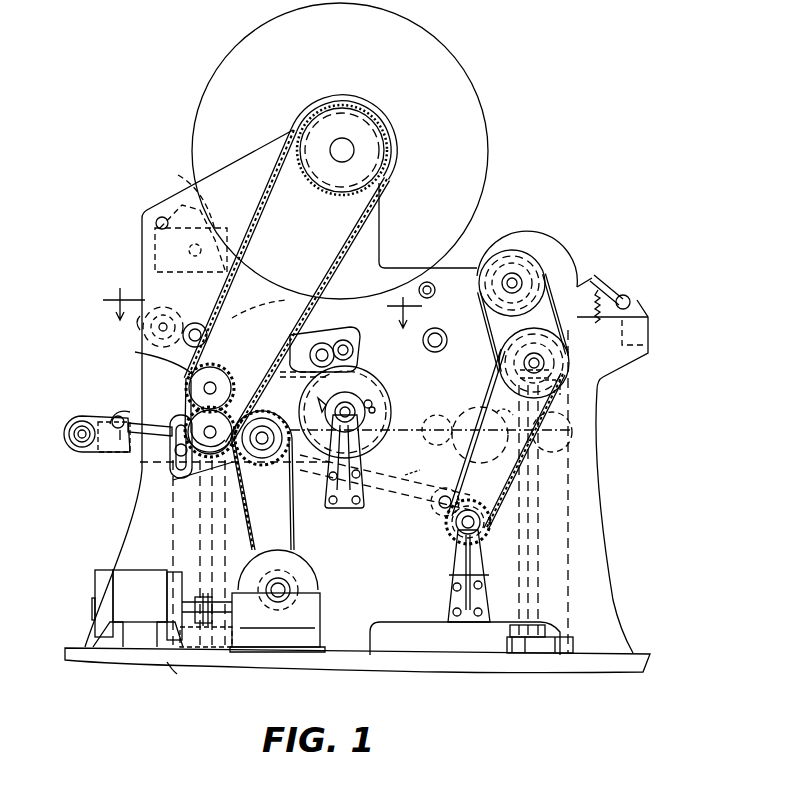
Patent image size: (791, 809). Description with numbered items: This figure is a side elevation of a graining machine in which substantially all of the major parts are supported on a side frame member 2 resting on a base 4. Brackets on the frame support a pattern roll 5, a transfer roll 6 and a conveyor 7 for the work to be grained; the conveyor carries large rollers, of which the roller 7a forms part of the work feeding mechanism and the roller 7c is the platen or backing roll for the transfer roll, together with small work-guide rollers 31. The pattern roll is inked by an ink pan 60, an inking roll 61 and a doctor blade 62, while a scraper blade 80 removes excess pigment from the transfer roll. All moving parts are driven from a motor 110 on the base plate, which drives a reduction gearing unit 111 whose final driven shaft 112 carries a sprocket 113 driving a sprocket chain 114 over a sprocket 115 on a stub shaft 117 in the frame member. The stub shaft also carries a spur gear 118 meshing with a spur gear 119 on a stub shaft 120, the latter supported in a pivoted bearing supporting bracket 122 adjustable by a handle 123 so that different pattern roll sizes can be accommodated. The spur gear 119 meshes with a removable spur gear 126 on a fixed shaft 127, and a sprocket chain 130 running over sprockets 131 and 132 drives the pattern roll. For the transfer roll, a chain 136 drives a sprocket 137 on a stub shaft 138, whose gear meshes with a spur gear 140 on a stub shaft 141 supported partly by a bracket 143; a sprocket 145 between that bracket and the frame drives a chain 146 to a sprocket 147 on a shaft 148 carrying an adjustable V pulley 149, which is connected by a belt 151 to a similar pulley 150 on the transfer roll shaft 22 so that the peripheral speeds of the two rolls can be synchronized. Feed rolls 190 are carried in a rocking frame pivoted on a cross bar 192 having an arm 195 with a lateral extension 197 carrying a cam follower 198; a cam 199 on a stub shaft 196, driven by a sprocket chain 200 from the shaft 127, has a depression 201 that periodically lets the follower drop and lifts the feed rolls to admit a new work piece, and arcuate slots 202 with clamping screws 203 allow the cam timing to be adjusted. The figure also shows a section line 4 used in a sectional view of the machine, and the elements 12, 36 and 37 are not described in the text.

The side frame member 2 is at (598, 590).
The base 4 is at (262, 492).
The pattern roll 5 is at (410, 30).
The transfer roll 6 is at (522, 222).
The conveyor 7 is at (108, 458).
The large roller 7a is at (150, 418).
The large roller 7c is at (482, 427).
The drive pulley 12 is at (346, 148).
The transfer roll shaft 22 is at (515, 283).
The small rollers 31 is at (442, 416).
The hidden frame line 36 is at (570, 556).
The base plate 37 is at (540, 665).
The ink pan 60 is at (155, 260).
The inking roll 61 is at (155, 222).
The doctor blade 62 is at (180, 180).
The scraper blade 80 is at (598, 282).
The motor 110 is at (162, 608).
The reduction gearing unit 111 is at (300, 566).
The final driven shaft 112 is at (285, 598).
The sprocket 113 is at (300, 586).
The sprocket chain 114 is at (252, 522).
The sprocket 115 is at (328, 466).
The stub shaft 117 is at (262, 445).
The spur gear 118 is at (280, 412).
The spur gear 119 is at (250, 505).
The stub shaft 120 is at (236, 412).
The pivoted bearing supporting bracket 122 is at (174, 482).
The handle 123 is at (132, 412).
The spur gear 126 is at (135, 352).
The shaft 127 is at (200, 386).
The sprocket chain 130 is at (320, 262).
The sprocket 131 is at (215, 372).
The sprocket 132 is at (312, 192).
The chain 136 is at (388, 500).
The sprocket 137 is at (436, 486).
The stub shaft 138 is at (442, 512).
The spur gear 140 is at (474, 500).
The stub shaft 141 is at (456, 540).
The bracket 143 is at (450, 580).
The sprocket 145 is at (498, 518).
The chain 146 is at (470, 462).
The sprocket 147 is at (572, 367).
The shaft 148 is at (538, 362).
The adjustable V pulley 149 is at (556, 350).
The adjustable V pulley 150 is at (530, 262).
The belt 151 is at (478, 345).
The feed rolls 190 is at (118, 300).
The cross bar or shaft 192 is at (200, 322).
The arm 195 is at (214, 314).
The stub shaft 196 is at (350, 410).
The lateral extension 197 is at (345, 340).
The cam follower 198 is at (322, 343).
The cam 199 is at (360, 372).
The sprocket chain 200 is at (301, 365).
The depression 201 is at (380, 395).
The arcuate slots 202 is at (376, 410).
The clamping screws 203 is at (372, 404).